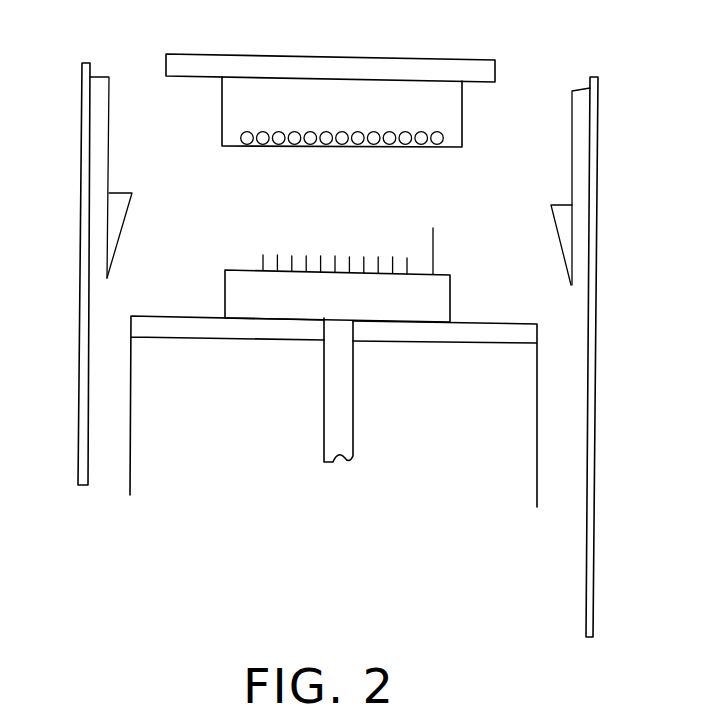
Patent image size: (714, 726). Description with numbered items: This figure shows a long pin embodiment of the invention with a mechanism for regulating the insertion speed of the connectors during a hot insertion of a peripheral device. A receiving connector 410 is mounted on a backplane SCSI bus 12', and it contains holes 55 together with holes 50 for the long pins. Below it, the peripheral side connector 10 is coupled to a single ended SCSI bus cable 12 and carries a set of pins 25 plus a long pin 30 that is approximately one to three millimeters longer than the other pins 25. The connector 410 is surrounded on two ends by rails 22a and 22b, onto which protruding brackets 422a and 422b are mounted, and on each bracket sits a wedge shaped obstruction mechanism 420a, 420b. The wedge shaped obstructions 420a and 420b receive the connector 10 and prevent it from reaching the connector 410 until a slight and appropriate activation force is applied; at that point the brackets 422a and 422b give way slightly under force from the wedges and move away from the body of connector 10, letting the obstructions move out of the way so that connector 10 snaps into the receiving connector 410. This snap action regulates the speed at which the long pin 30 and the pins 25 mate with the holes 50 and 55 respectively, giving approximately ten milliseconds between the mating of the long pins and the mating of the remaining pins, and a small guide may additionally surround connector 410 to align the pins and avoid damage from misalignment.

The backplane SCSI bus 12' is at (330, 43).
The receiving connector 410 is at (222, 119).
The holes 55 is at (372, 124).
The holes for long pins 50 is at (437, 132).
The rail 22b is at (80, 341).
The protruding bracket 422b is at (109, 112).
The wedge shaped obstruction mechanism 420b is at (124, 214).
The rail 22a is at (595, 412).
The protruding bracket 422a is at (572, 125).
The wedge shaped obstruction mechanism 420a is at (556, 213).
The connector 10 is at (405, 311).
The single ended SCSI bus cable 12 is at (312, 390).
The pins 25 is at (318, 243).
The long pins 30 is at (433, 238).